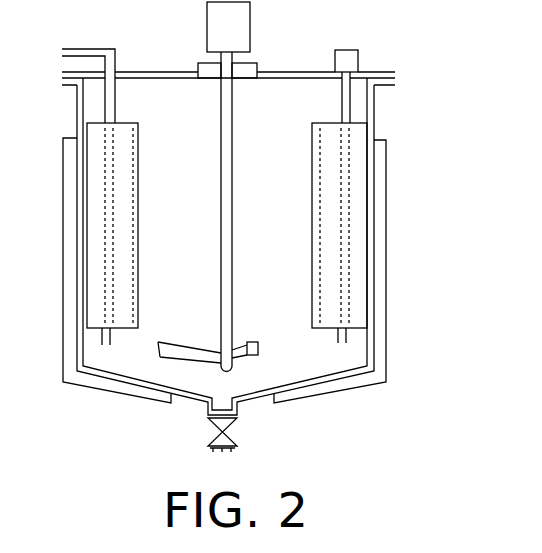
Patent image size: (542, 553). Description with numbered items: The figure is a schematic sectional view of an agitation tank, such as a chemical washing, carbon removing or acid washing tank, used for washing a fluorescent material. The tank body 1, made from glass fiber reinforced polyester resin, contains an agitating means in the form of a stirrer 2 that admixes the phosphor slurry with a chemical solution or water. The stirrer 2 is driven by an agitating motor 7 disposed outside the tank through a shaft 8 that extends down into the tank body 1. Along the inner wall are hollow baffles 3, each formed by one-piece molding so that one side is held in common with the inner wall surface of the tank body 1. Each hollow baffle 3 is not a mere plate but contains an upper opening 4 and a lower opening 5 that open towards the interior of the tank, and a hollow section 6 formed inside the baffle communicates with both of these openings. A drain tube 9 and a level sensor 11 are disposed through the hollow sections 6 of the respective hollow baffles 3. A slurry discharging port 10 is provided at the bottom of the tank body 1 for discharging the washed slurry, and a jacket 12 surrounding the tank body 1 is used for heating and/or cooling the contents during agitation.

The tank body 1 is at (386, 98).
The stirrer 2 is at (208, 338).
The baffle 3 is at (370, 241).
The upper opening 4 is at (322, 117).
The lower opening 5 is at (323, 331).
The hollow section 6 is at (360, 146).
The agitating motor 7 is at (228, 27).
The shaft 8 is at (235, 212).
The drain tube 9 is at (88, 74).
The slurry discharging port 10 is at (236, 435).
The level sensor 11 is at (348, 74).
The jacket 12 is at (389, 303).